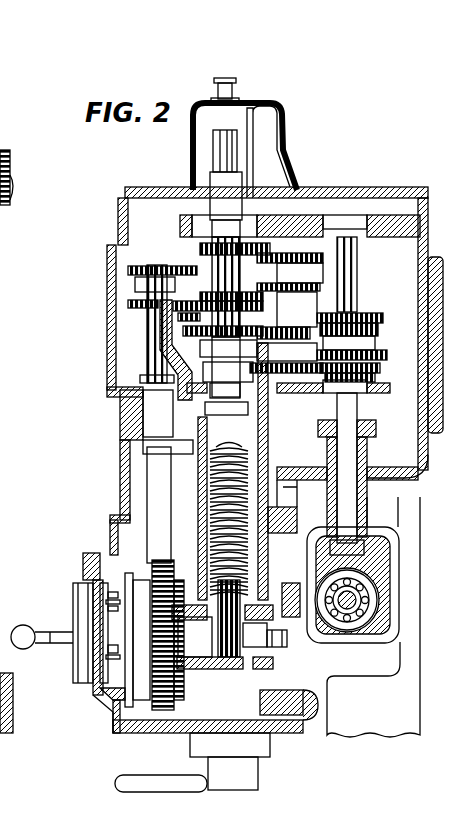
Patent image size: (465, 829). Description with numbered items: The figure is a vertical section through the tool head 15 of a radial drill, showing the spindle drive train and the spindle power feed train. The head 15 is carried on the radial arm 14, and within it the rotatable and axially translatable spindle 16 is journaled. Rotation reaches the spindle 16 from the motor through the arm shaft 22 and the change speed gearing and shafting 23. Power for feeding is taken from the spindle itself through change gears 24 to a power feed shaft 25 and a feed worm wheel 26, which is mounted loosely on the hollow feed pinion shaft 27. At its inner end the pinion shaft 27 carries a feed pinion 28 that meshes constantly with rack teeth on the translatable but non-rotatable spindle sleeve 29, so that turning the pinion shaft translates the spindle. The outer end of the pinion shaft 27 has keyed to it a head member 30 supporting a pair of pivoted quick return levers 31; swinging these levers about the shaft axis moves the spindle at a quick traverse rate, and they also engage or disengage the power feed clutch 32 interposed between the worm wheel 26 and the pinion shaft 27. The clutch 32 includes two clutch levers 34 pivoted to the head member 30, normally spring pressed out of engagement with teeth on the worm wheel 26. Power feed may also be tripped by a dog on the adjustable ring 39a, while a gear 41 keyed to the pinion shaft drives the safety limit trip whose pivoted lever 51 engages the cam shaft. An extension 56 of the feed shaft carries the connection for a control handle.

The arm 14 is at (393, 707).
The tool head 15 is at (120, 455).
The spindle 16 is at (215, 145).
The arm shaft 22 is at (367, 600).
The change speed gearing and shafting 23 is at (320, 297).
The change gears 24 is at (135, 297).
The power feed shaft 25 is at (153, 497).
The feed worm wheel 26 is at (157, 563).
The feed pinion shaft 27 is at (253, 670).
The feed pinion 28 is at (230, 640).
The spindle sleeve 29 is at (200, 475).
The head member 30 is at (97, 612).
The quick return levers 31 is at (23, 625).
The power feed clutch 32 is at (110, 695).
The clutch levers 34 is at (108, 603).
The adjustable ring 39a is at (80, 683).
The gear 41 is at (190, 673).
The pivoted lever 51 is at (290, 640).
The extension of the shaft 56 is at (10, 196).